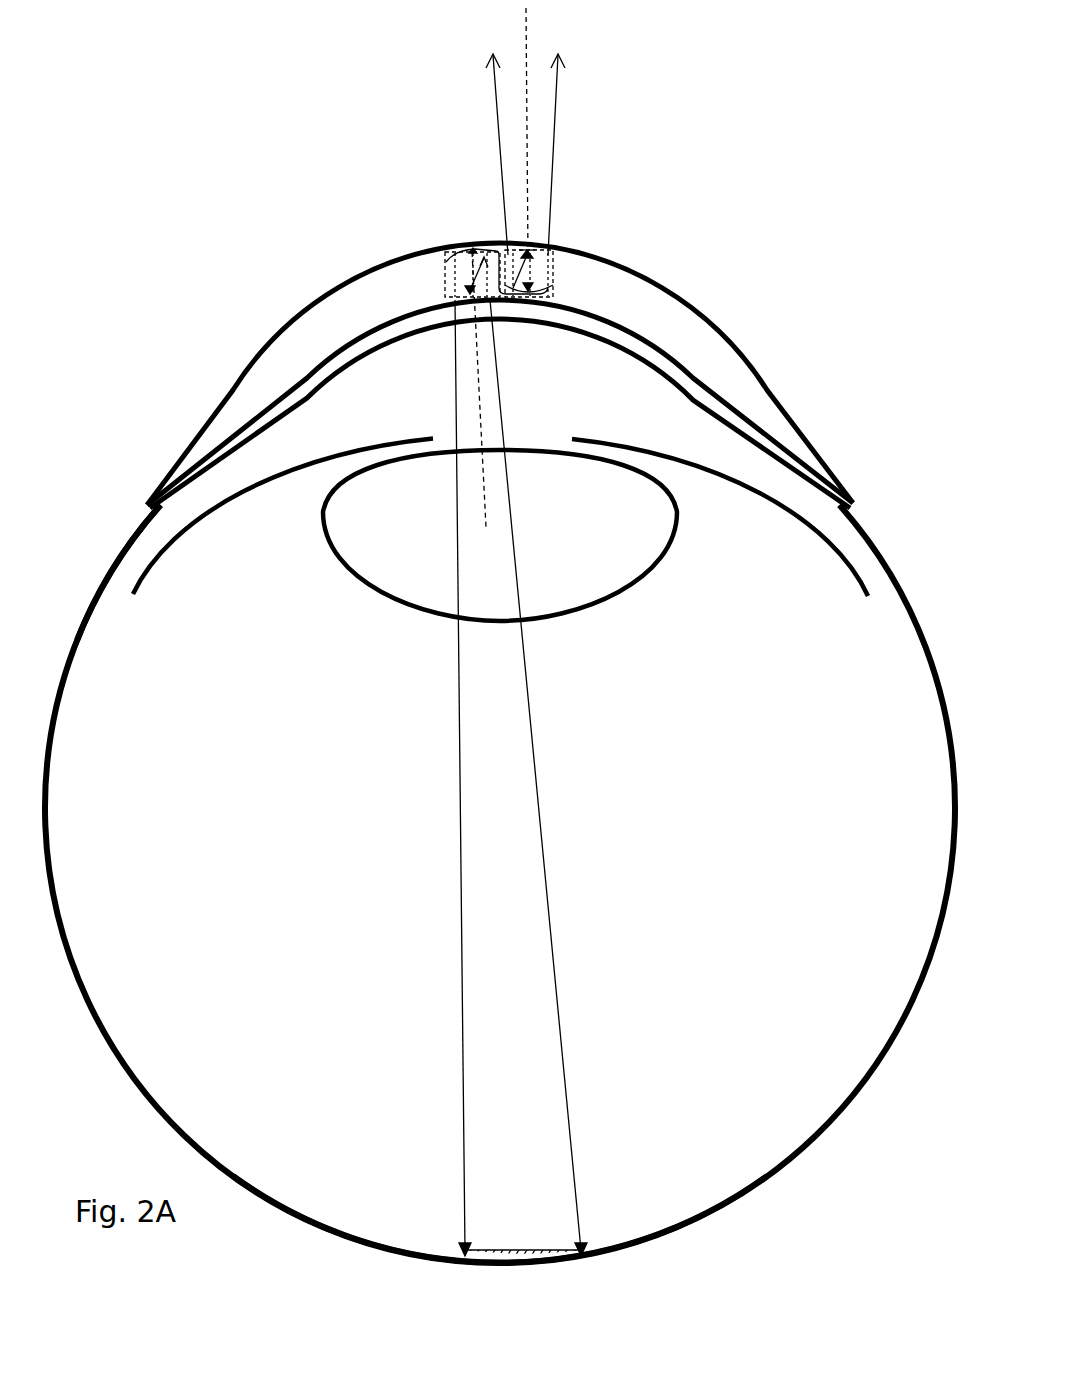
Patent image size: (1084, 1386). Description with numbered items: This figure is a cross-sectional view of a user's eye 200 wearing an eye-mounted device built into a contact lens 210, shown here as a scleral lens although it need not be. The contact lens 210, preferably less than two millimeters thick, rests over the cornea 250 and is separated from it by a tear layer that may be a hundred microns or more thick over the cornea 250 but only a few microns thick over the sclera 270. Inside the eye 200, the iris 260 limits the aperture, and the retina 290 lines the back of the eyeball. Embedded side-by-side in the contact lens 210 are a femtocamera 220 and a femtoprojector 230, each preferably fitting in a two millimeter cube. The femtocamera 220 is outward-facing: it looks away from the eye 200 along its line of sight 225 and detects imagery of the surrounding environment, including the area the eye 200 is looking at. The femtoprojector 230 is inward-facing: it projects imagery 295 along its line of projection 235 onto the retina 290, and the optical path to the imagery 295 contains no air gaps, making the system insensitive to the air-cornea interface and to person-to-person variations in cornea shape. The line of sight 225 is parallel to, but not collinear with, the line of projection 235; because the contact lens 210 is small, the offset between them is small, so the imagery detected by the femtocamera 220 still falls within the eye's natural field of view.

The eye 200 is at (500, 884).
The contact lens 210 is at (500, 374).
The femtocamera 220 is at (560, 246).
The line of sight 225 is at (549, 128).
The femtoprojector 230 is at (443, 249).
The line of projection 235 is at (490, 408).
The cornea 250 is at (622, 397).
The iris 260 is at (633, 447).
The sclera 270 is at (167, 541).
The retina 290 is at (233, 1175).
The imagery 295 is at (550, 1252).